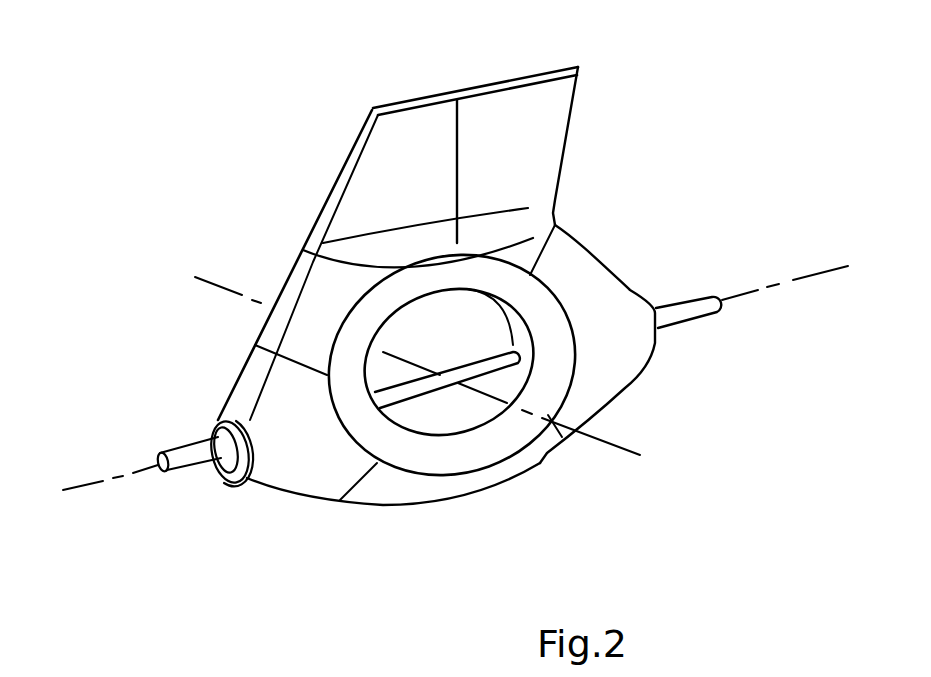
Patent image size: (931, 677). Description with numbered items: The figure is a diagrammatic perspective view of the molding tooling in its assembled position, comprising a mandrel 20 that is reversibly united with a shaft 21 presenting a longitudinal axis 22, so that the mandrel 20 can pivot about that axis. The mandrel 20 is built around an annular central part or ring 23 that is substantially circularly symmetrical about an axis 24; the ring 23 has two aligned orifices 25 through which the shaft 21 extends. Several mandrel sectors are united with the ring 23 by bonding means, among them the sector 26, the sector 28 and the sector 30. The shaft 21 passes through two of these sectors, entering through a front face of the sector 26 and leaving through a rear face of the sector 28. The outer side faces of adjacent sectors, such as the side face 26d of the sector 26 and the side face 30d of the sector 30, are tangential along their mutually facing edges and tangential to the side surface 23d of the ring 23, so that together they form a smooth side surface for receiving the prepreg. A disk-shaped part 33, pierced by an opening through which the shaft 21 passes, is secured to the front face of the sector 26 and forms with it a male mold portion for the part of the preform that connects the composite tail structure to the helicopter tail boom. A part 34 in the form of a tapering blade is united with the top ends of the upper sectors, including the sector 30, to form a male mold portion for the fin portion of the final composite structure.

The mandrel 20 is at (543, 146).
The shaft 21 is at (687, 307).
The longitudinal axis 22 is at (797, 279).
The annular central part 23 is at (482, 455).
The side surface of the ring 23d is at (425, 447).
The axis 24 is at (624, 453).
The orifices 25 is at (508, 340).
The sector 26 is at (267, 487).
The outer side face of the sector 26d is at (323, 466).
The sector 28 is at (623, 387).
The sector 30 is at (313, 220).
The outer side face of the sector 30d is at (377, 240).
The disk-shaped part 33 is at (208, 428).
The tapering blade part 34 is at (418, 88).